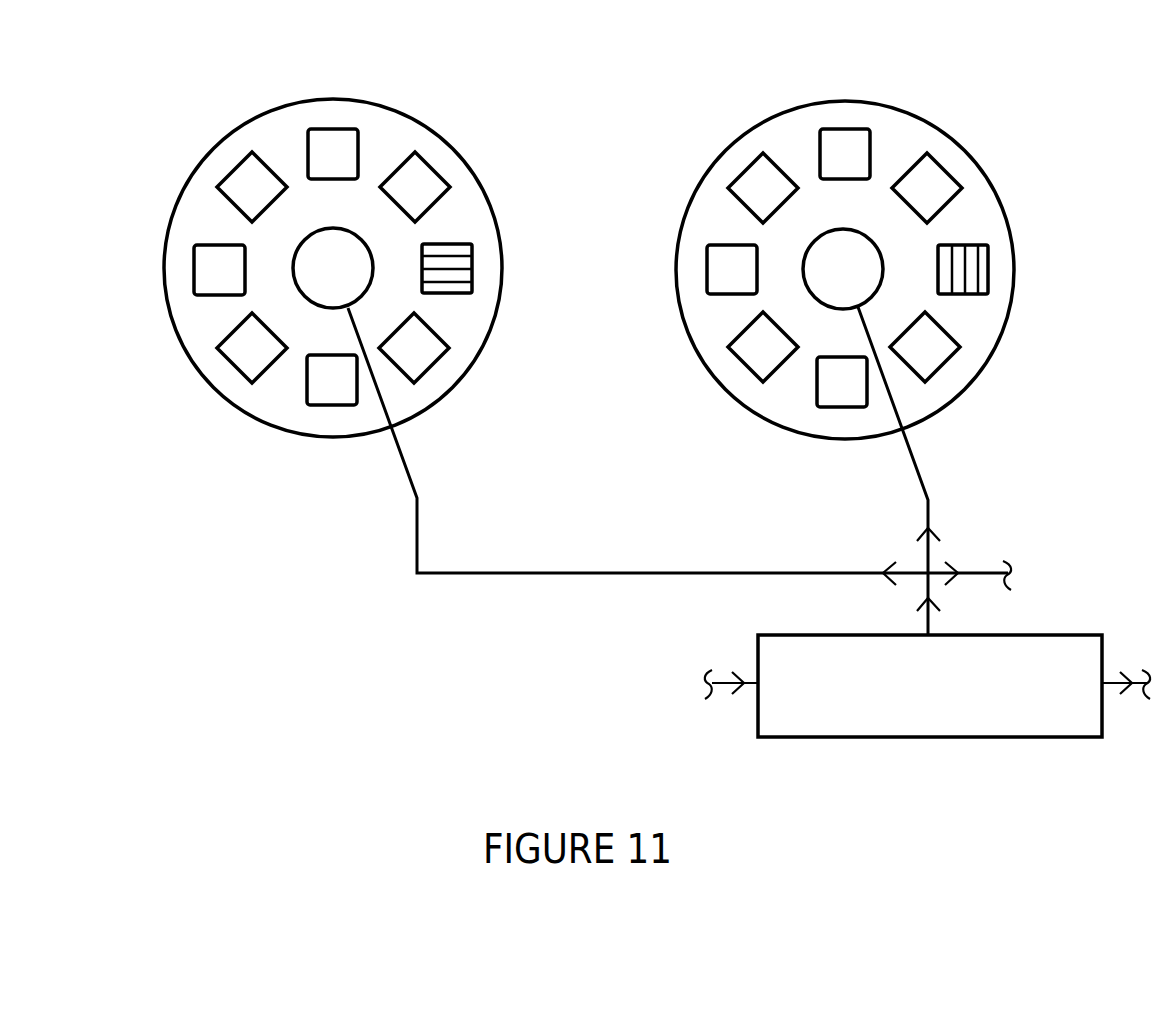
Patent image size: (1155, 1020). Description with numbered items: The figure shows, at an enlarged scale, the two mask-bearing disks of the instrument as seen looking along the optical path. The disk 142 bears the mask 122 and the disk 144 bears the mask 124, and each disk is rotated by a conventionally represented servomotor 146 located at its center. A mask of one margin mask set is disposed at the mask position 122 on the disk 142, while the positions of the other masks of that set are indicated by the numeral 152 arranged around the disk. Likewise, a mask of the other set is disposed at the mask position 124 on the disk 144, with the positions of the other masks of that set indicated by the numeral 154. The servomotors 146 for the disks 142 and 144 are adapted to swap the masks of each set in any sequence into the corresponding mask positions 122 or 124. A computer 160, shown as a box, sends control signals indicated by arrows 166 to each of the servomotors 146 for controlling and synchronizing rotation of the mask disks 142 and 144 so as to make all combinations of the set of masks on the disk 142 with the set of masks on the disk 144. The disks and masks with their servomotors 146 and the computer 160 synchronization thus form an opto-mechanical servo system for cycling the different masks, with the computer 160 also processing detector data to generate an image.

The mask 122 is at (988, 270).
The mask 124 is at (473, 265).
The disk with masks 142 is at (925, 112).
The disk with masks 144 is at (426, 114).
The servomotor for disks 146 is at (315, 307).
The other masks on disk 152 is at (843, 128).
The other masks on disk 154 is at (337, 128).
The computer 160 is at (908, 737).
The control signals from computer 166 is at (940, 608).